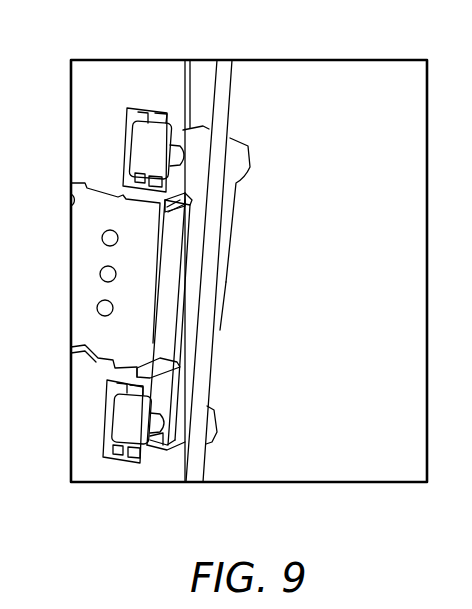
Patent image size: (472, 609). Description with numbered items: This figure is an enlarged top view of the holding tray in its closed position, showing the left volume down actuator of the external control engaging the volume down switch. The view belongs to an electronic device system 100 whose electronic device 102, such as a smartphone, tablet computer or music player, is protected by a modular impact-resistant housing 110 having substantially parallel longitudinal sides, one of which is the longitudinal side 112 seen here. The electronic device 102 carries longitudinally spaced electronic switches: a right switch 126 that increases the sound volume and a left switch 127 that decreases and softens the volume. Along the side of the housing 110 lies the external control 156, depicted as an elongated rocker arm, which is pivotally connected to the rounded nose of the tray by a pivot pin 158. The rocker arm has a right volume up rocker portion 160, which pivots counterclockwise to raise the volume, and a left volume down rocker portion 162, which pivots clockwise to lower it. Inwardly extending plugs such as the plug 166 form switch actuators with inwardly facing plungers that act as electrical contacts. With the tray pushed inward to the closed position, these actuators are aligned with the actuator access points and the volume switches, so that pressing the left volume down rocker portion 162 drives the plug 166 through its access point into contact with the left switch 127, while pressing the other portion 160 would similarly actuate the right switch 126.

The electronic device system 100 is at (145, 242).
The electronic device 102 is at (100, 74).
The modular impact-resistant housing 110 is at (185, 473).
The longitudinal side 112 is at (236, 96).
The right switch 126 is at (150, 427).
The left switch 127 is at (160, 143).
The external control 156 is at (222, 289).
The pivot pin 158 is at (158, 278).
The right volume up rocker portion 160 is at (251, 156).
The left volume down rocker portion 162 is at (219, 431).
The plug 166 is at (160, 437).